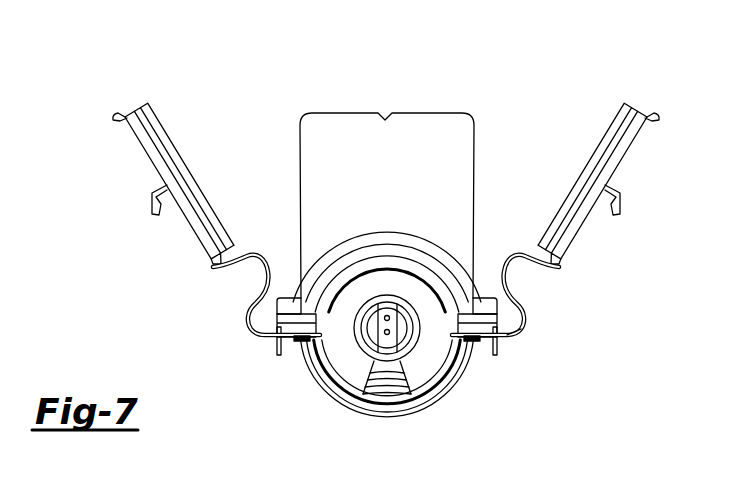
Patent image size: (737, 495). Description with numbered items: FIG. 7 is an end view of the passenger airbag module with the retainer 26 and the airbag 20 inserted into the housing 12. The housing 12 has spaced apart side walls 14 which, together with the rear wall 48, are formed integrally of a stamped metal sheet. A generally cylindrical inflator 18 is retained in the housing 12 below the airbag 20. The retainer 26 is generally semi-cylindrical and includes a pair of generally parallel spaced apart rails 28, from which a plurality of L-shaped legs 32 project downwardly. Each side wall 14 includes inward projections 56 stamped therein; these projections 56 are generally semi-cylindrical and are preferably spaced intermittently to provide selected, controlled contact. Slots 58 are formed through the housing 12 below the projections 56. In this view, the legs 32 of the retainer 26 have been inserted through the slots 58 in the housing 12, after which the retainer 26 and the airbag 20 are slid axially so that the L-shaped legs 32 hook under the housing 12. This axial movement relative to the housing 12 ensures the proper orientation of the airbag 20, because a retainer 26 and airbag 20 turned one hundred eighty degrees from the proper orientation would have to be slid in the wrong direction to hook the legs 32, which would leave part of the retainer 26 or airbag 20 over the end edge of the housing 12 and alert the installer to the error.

The housing 12 is at (107, 110).
The side walls 14 is at (214, 268).
The airbag 20 is at (482, 137).
The retainer 26 is at (350, 226).
The rails 28 is at (303, 272).
The L-shaped legs 32 is at (277, 348).
The inward projections 56 is at (260, 257).
The slots 58 is at (524, 318).
The inflator 18 is at (452, 380).
The rear wall 48 is at (340, 398).